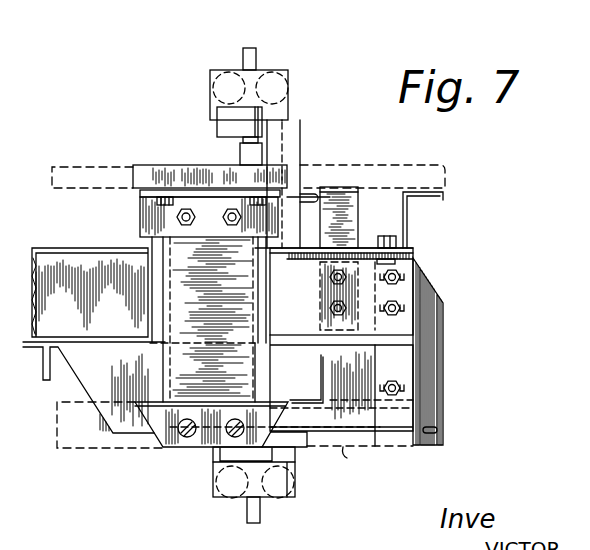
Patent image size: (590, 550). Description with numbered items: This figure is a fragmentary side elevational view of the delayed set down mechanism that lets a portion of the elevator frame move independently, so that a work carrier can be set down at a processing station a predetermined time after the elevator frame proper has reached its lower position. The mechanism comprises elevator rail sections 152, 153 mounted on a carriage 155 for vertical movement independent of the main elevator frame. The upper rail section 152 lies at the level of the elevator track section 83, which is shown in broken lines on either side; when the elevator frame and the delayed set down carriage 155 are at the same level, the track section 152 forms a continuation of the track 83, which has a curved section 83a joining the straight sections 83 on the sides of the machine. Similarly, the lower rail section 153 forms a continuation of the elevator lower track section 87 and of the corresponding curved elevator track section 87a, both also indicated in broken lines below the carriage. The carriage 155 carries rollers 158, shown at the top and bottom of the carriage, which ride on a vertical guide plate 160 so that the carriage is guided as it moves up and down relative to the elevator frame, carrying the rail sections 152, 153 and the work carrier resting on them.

The track section 83 is at (97, 168).
The curved section 83a is at (380, 168).
The lower track section 87 is at (87, 450).
The curved elevator track section 87a is at (347, 458).
The elevator rail section 152 is at (182, 182).
The elevator rail section 153 is at (178, 450).
The carriage 155 is at (299, 107).
The rollers 158 is at (268, 70).
The vertical guide plate 160 is at (253, 55).